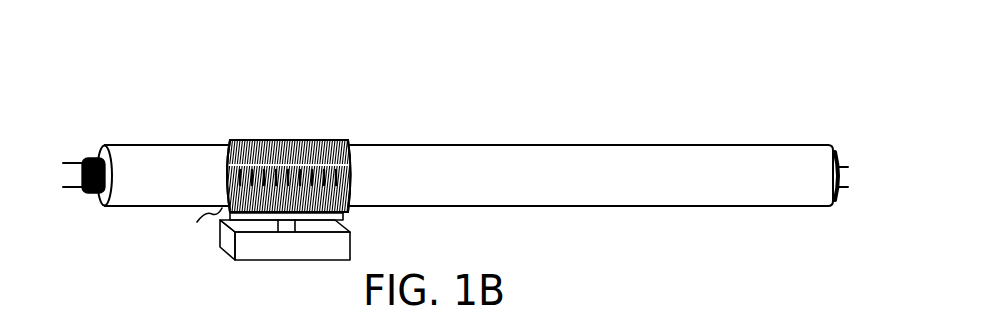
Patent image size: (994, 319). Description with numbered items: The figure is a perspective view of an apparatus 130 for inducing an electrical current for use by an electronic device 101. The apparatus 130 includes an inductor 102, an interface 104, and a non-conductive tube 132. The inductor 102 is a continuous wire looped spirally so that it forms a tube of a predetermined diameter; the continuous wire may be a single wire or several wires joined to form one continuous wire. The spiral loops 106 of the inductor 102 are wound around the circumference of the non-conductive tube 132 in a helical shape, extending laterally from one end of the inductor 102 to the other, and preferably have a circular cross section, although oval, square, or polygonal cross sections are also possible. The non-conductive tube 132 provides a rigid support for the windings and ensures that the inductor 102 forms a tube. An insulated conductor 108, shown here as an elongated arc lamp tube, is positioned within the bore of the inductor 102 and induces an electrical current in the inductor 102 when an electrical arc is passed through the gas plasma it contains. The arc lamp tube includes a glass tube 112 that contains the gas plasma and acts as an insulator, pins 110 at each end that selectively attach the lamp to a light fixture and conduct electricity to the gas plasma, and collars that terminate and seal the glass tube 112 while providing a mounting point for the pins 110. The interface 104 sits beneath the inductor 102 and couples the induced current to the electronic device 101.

The apparatus 130 is at (146, 80).
The inductor 102 is at (360, 105).
The spiral loops 106 is at (345, 140).
The interface 104 is at (358, 225).
The electronic device 101 is at (285, 240).
The insulated conductor 108 is at (201, 133).
The glass tube 112 is at (550, 145).
The pins 110 is at (68, 163).
The non-conductive tube 132 is at (194, 223).